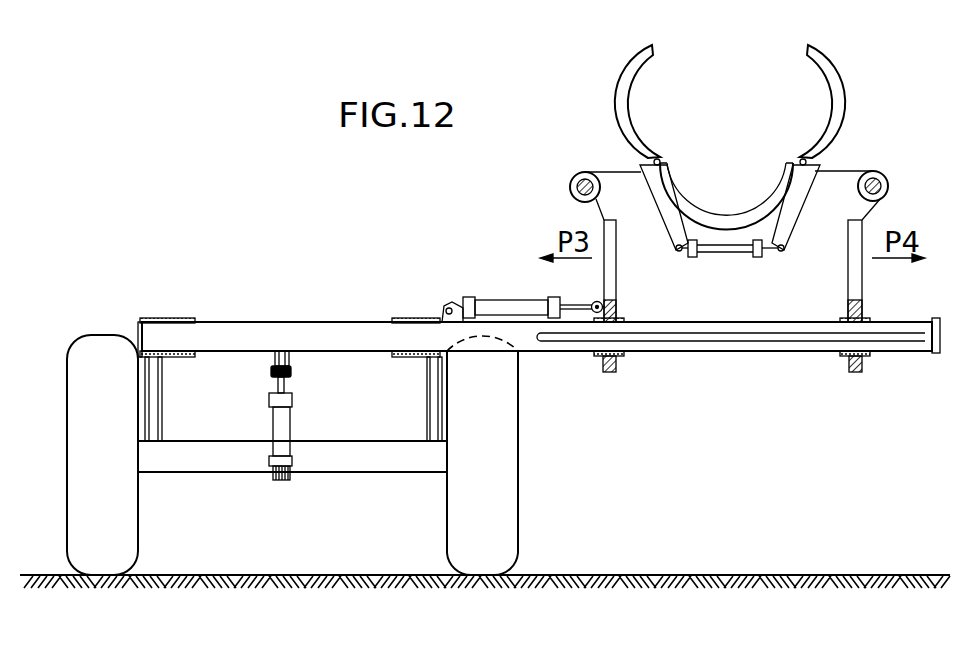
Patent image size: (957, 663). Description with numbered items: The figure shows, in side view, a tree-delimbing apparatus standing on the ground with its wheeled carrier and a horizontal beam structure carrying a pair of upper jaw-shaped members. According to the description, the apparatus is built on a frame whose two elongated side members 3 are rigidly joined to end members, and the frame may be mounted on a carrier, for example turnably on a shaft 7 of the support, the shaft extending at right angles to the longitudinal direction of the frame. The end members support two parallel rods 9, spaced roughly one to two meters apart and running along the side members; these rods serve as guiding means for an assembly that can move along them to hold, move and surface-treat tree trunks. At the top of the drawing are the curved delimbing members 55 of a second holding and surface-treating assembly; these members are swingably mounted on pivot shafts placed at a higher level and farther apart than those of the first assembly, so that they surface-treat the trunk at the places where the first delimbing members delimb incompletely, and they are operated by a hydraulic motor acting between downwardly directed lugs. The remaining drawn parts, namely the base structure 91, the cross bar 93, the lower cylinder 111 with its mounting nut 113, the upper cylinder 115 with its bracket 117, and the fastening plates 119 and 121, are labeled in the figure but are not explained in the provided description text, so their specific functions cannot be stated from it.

The side member 3 is at (748, 255).
The shaft 7 is at (887, 344).
The rod 9 is at (882, 179).
The delimbing member 55 is at (627, 127).
The vehicle chassis 91 is at (292, 455).
The cross bar 93 is at (203, 461).
The hydraulic cylinder 111 is at (318, 436).
The mounting nut 113 is at (292, 368).
The hydraulic cylinder 115 is at (496, 305).
The bracket 117 is at (440, 321).
The fastening plate 119 is at (181, 319).
The fastening plate 121 is at (391, 319).